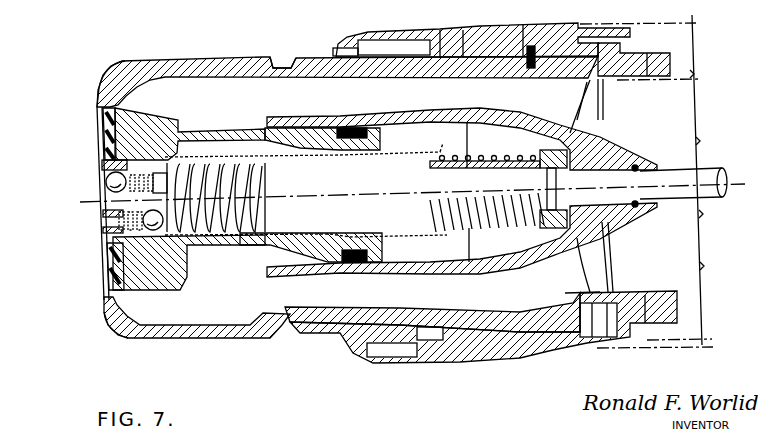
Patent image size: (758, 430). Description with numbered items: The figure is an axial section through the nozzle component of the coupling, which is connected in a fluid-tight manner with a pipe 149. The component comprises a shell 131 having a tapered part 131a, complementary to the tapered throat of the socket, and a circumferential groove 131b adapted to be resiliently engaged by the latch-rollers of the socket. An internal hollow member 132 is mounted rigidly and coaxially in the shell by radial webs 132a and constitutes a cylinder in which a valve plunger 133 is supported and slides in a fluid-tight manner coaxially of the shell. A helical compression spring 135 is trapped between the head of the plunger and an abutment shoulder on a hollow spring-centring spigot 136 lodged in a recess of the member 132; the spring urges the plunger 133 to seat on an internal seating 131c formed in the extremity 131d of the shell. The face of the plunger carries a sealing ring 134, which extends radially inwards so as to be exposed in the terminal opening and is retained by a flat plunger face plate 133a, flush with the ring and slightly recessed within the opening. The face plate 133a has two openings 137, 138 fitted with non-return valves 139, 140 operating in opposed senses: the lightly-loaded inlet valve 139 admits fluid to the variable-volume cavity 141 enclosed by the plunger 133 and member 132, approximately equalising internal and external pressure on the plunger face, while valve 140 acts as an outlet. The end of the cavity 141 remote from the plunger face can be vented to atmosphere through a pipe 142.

The shell 131 is at (322, 62).
The tapered part 131a is at (123, 70).
The circumferential groove 131b is at (269, 60).
The internal seating 131c is at (97, 97).
The extremity 131d is at (110, 325).
The internal hollow member 132 is at (352, 348).
The radial webs 132a is at (577, 275).
The valve plunger 133 is at (120, 337).
The plunger face plate 133a is at (103, 163).
The sealing ring 134 is at (103, 130).
The helical compression spring 135 is at (210, 242).
The spring-centring spigot 136 is at (434, 200).
The opening 137 is at (104, 183).
The opening 138 is at (100, 230).
The inlet non-return valve 139 is at (100, 209).
The outlet non-return valve 140 is at (107, 262).
The cavity 141 is at (407, 140).
The pipe 142 is at (656, 190).
The pipe 149 is at (690, 297).